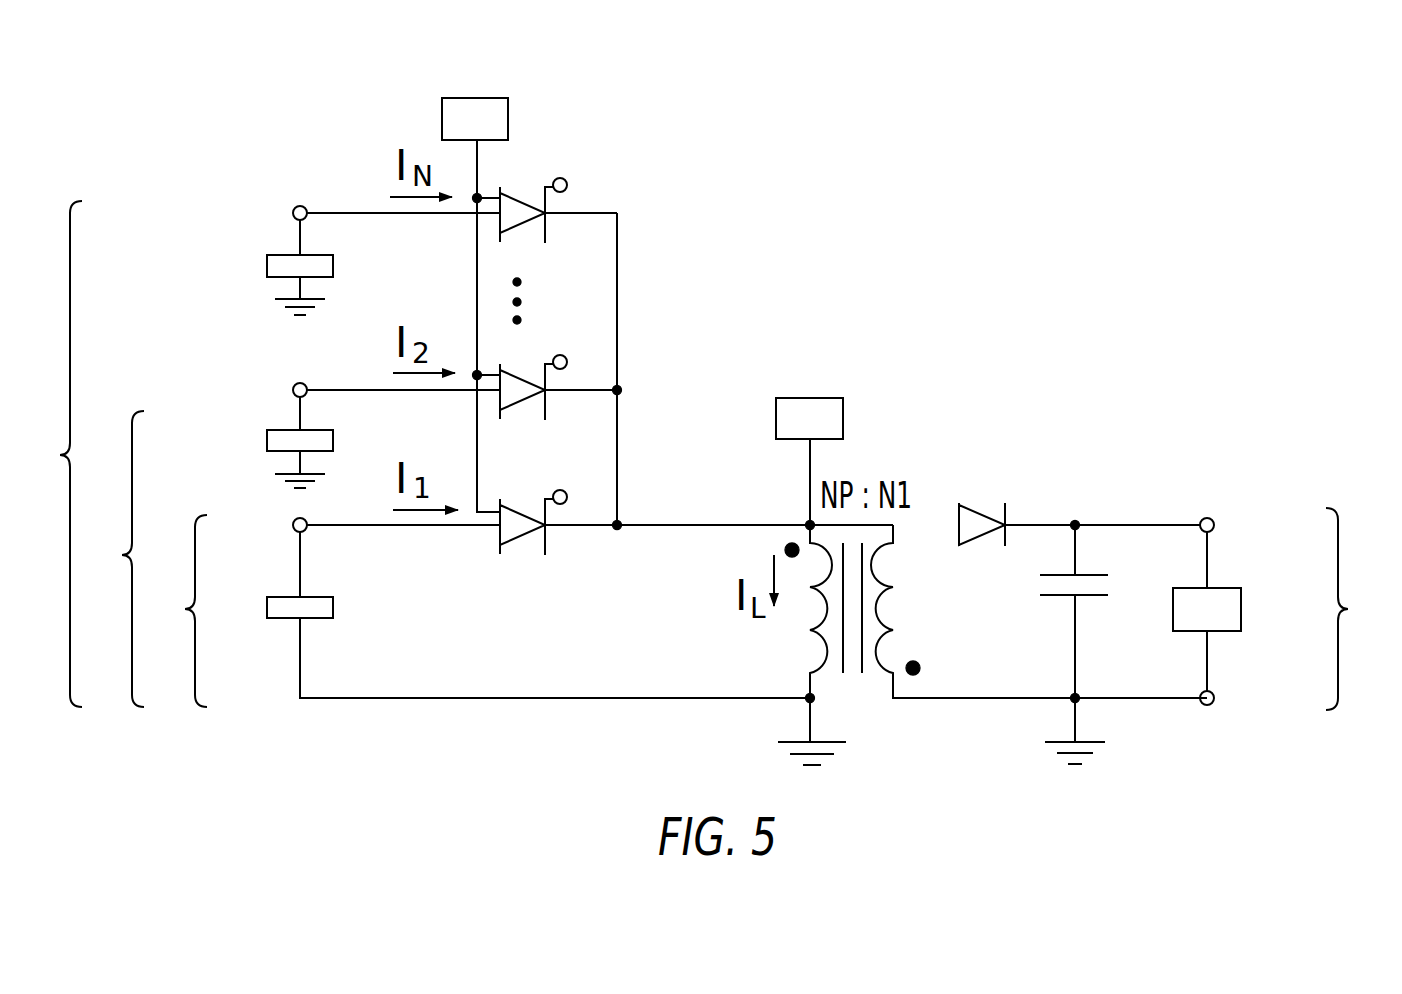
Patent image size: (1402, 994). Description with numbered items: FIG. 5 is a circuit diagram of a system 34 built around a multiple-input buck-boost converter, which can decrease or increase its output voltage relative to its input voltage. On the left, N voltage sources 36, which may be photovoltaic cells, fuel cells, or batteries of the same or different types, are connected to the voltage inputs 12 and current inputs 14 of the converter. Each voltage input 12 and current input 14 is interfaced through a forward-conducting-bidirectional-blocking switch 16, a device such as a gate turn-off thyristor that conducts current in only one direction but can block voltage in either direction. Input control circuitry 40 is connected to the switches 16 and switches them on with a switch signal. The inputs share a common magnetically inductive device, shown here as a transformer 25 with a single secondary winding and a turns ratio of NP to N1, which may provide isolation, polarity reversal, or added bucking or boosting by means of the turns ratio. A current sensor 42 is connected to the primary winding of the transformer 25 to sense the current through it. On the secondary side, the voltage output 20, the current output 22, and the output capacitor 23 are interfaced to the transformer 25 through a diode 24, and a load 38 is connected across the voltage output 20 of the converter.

The voltage input 12 is at (120, 454).
The current input 14 is at (296, 208).
The forward-conducting-bidirectional-blocking switch 16 is at (567, 183).
The voltage output 20 is at (1353, 609).
The current output 22 is at (1212, 517).
The output capacitor 23 is at (1093, 598).
The diode 24 is at (982, 512).
The transformer 25 is at (872, 708).
The system 34 is at (1072, 230).
The voltage source 36 is at (283, 256).
The load 38 is at (1241, 605).
The input control circuitry 40 is at (480, 158).
The current sensor 42 is at (843, 415).